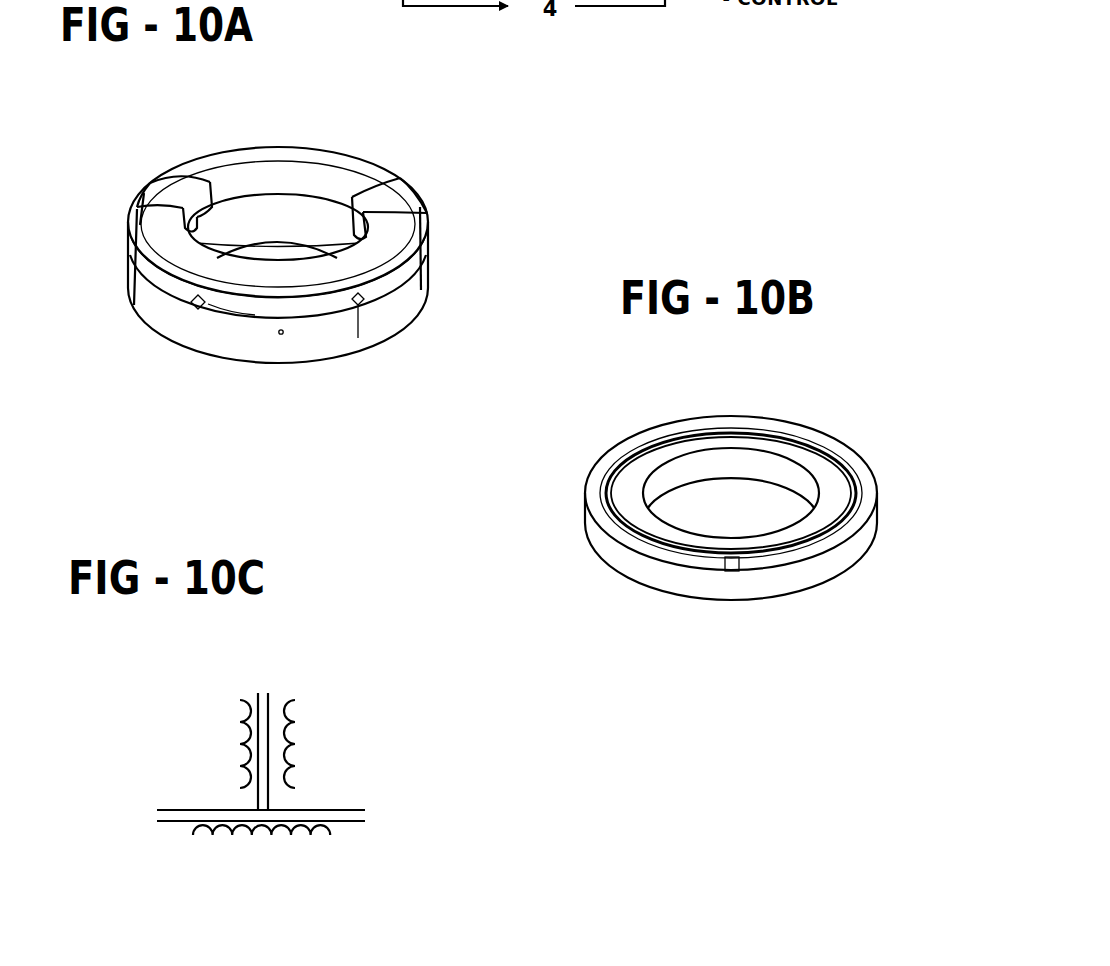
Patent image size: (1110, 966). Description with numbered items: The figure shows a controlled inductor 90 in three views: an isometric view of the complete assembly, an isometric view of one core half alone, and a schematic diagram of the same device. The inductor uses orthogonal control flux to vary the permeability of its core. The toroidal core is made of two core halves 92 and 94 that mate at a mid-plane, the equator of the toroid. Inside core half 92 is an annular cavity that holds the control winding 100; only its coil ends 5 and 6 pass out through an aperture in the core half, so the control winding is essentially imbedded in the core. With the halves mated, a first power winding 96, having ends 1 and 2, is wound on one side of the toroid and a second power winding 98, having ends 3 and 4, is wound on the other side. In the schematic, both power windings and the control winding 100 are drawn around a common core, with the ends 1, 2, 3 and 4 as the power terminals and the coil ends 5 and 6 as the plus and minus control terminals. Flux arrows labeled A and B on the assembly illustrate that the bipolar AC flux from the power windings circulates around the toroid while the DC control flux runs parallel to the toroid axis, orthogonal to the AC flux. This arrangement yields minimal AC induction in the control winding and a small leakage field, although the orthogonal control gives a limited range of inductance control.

In FIG. 10A, the controlled inductor 90 is at (289, 136).
In FIG. 10A, the core half 92 is at (407, 310).
In FIG. 10B, the core half 92 is at (607, 550).
In FIG. 10A, the core half 94 is at (355, 168).
In FIG. 10A, the first power winding 96 is at (150, 160).
In FIG. 10C, the first power winding 96 is at (203, 698).
In FIG. 10A, the second power winding 98 is at (479, 290).
In FIG. 10C, the second power winding 98 is at (343, 698).
In FIG. 10A, the control winding 100 is at (328, 407).
In FIG. 10B, the control winding 100 is at (760, 430).
In FIG. 10C, the control winding 100 is at (330, 835).
In FIG. 10A, the end of first power winding 1 is at (222, 190).
In FIG. 10C, the end of first power winding 1 is at (240, 700).
In FIG. 10A, the end of first power winding 2 is at (133, 306).
In FIG. 10C, the end of first power winding 2 is at (240, 788).
In FIG. 10A, the end of second power winding 3 is at (358, 235).
In FIG. 10C, the end of second power winding 3 is at (295, 700).
In FIG. 10A, the end of second power winding 4 is at (370, 232).
In FIG. 10C, the end of second power winding 4 is at (295, 788).
In FIG. 10A, the coil end of control winding 5 is at (278, 334).
In FIG. 10B, the coil end of control winding 5 is at (730, 572).
In FIG. 10C, the coil end of control winding 5 is at (193, 835).
In FIG. 10A, the coil end of control winding 6 is at (283, 336).
In FIG. 10B, the coil end of control winding 6 is at (735, 572).
In FIG. 10C, the coil end of control winding 6 is at (330, 835).